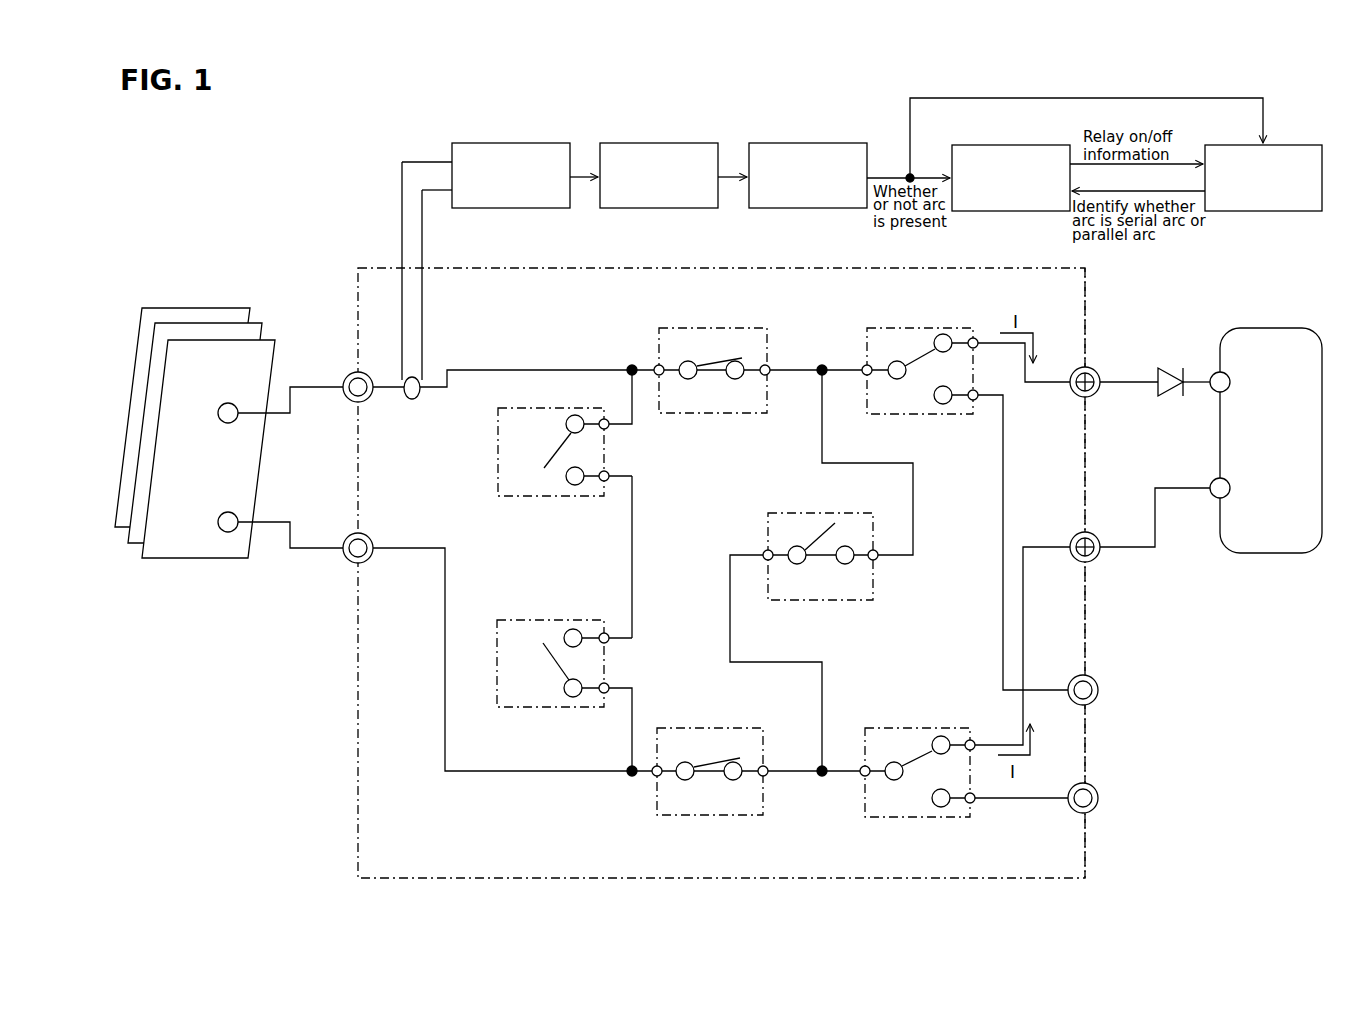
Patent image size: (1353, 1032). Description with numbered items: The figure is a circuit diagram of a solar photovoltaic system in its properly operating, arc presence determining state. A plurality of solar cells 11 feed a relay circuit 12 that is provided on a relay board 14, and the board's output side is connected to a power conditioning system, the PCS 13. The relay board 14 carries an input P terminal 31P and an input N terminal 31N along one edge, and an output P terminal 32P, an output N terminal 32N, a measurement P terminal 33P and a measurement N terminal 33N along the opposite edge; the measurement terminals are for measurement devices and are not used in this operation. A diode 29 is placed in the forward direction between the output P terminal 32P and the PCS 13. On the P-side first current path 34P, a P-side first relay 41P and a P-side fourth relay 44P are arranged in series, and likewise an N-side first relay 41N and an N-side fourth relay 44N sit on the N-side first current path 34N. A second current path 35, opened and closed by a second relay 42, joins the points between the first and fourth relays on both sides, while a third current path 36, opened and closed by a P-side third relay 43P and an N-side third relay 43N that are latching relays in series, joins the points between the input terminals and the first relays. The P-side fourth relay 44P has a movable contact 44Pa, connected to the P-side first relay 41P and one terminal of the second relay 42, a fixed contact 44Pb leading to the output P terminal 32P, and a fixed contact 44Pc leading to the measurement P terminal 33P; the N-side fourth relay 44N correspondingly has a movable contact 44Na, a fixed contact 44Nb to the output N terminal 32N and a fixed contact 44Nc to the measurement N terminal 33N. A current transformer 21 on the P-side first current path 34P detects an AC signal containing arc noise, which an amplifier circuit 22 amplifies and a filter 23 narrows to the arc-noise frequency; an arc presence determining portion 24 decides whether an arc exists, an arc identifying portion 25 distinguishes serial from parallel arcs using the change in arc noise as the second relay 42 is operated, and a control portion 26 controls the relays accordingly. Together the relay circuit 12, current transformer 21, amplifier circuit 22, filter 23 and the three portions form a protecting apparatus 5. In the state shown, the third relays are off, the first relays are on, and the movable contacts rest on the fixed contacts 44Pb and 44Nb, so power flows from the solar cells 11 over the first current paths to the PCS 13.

The protecting apparatus 5 is at (195, 339).
The solar cells 11 is at (217, 305).
The relay circuit 12 is at (744, 561).
The power conditioning system (PCS) 13 is at (1265, 329).
The relay board 14 is at (1060, 268).
The current transformer 21 is at (426, 362).
The amplifier circuit 22 is at (531, 143).
The filter 23 is at (678, 143).
The arc presence determining portion 24 is at (828, 143).
The arc identifying portion 25 is at (1283, 145).
The control portion 26 is at (1031, 145).
The diode 29 is at (1171, 368).
The input P terminal 31P is at (345, 376).
The input N terminal 31N is at (346, 561).
The output P terminal 32P is at (1098, 372).
The output N terminal 32N is at (1097, 560).
The measurement P terminal 33P is at (1095, 679).
The measurement N terminal 33N is at (1095, 787).
The P-side first current path 34P is at (535, 369).
The N-side first current path 34N is at (444, 645).
The second current path 35 is at (914, 514).
The third current path 36 is at (634, 514).
The P-side first relay 41P is at (683, 328).
The N-side first relay 41N is at (680, 728).
The second relay 42 is at (793, 513).
The P-side third relay 43P is at (536, 408).
The N-side third relay 43N is at (534, 620).
The P-side fourth relay 44P is at (953, 485).
The movable contact 44Pa is at (889, 404).
The fixed contact 44Pb is at (943, 334).
The fixed contact 44Pc is at (944, 404).
The N-side fourth relay 44N is at (946, 701).
The movable contact 44Na is at (888, 806).
The fixed contact 44Nb is at (943, 736).
The fixed contact 44Nc is at (941, 807).